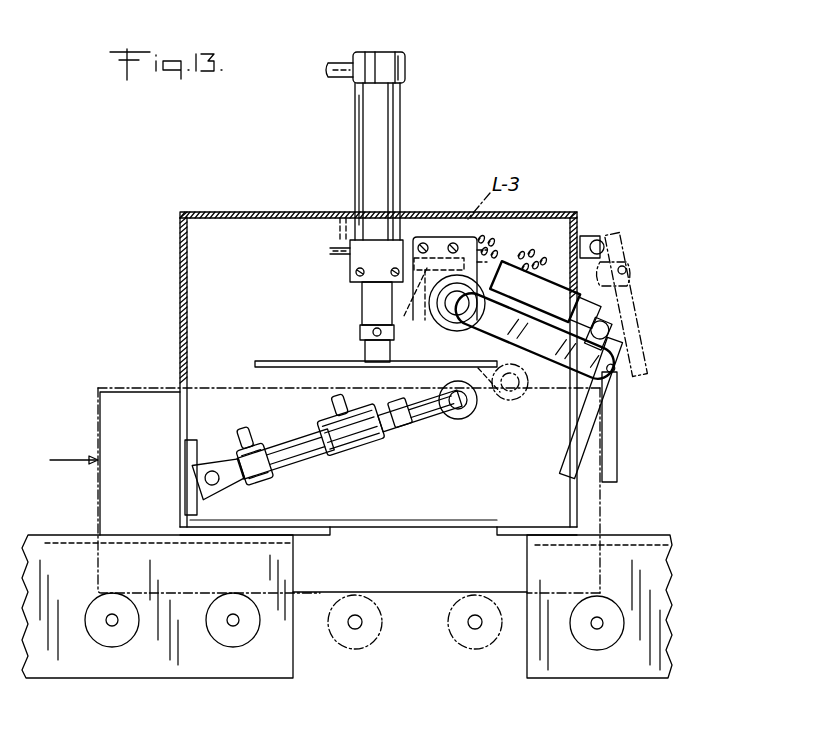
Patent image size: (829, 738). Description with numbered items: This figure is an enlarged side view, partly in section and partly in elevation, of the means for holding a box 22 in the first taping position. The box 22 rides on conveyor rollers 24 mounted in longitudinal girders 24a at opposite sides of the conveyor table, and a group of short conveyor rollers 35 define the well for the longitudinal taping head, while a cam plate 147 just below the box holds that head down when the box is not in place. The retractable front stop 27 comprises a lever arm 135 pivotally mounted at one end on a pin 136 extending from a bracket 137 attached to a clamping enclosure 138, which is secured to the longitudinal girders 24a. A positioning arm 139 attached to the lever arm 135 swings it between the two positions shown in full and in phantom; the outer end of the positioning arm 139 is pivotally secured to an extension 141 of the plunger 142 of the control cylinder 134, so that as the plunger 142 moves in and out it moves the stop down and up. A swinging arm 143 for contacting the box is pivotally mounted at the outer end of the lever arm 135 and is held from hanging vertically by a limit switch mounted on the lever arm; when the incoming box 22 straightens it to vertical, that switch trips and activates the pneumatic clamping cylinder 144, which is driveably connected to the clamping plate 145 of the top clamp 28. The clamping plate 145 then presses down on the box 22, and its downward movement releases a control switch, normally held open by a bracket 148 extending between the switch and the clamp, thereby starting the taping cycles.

The box 22 is at (147, 372).
The rollers 24 is at (110, 642).
The longitudinal girders 24a is at (208, 667).
The retractable stop 27 is at (635, 273).
The top clamp 28 is at (350, 173).
The short conveyor rollers 35 is at (347, 645).
The control cylinder 134 is at (305, 458).
The lever arm 135 is at (567, 365).
The pin 136 is at (456, 307).
The bracket 137 is at (468, 268).
The clamping enclosure 138 is at (446, 238).
The positioning arm 139 is at (446, 376).
The extension 141 is at (434, 424).
The plunger 142 is at (389, 436).
The swinging arm 143 is at (578, 451).
The pneumatic clamping cylinder 144 is at (383, 141).
The clamping plate 145 is at (303, 383).
The cam plate 147 is at (428, 598).
The bracket 148 is at (418, 303).